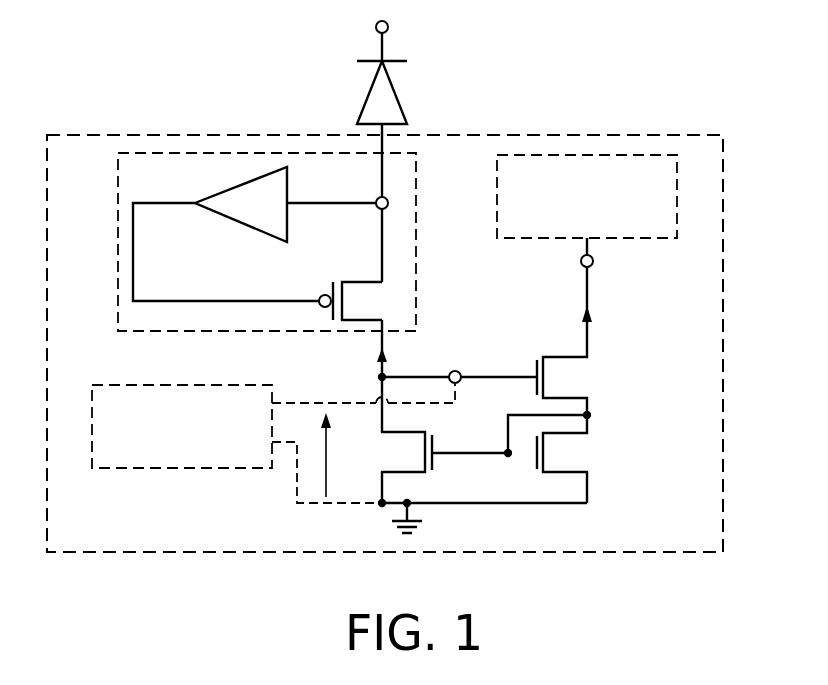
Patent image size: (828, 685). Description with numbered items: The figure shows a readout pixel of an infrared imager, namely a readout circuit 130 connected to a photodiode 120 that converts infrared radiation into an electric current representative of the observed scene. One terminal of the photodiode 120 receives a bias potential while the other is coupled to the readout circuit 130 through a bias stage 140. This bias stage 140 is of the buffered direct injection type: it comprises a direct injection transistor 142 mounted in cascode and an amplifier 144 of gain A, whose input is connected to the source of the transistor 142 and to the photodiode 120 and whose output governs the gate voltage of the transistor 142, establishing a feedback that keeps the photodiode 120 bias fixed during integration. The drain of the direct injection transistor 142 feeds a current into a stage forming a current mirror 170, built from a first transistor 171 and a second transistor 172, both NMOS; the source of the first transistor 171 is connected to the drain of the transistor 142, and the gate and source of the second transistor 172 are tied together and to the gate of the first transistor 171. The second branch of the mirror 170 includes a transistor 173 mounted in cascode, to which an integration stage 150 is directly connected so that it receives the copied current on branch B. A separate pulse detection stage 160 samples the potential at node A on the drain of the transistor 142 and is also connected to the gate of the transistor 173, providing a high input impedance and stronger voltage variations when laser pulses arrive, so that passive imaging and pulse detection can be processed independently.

The photodiode 120 is at (390, 98).
The readout circuit 130 is at (637, 554).
The bias stage 140 is at (118, 257).
The direct injection transistor 142 is at (360, 294).
The amplifier 144 is at (240, 197).
The integration stage 150 is at (642, 238).
The pulse detection stage 160 is at (120, 468).
The current mirror 170 is at (460, 510).
The first transistor 171 is at (434, 464).
The second transistor 172 is at (560, 455).
The cascode transistor 173 is at (560, 378).